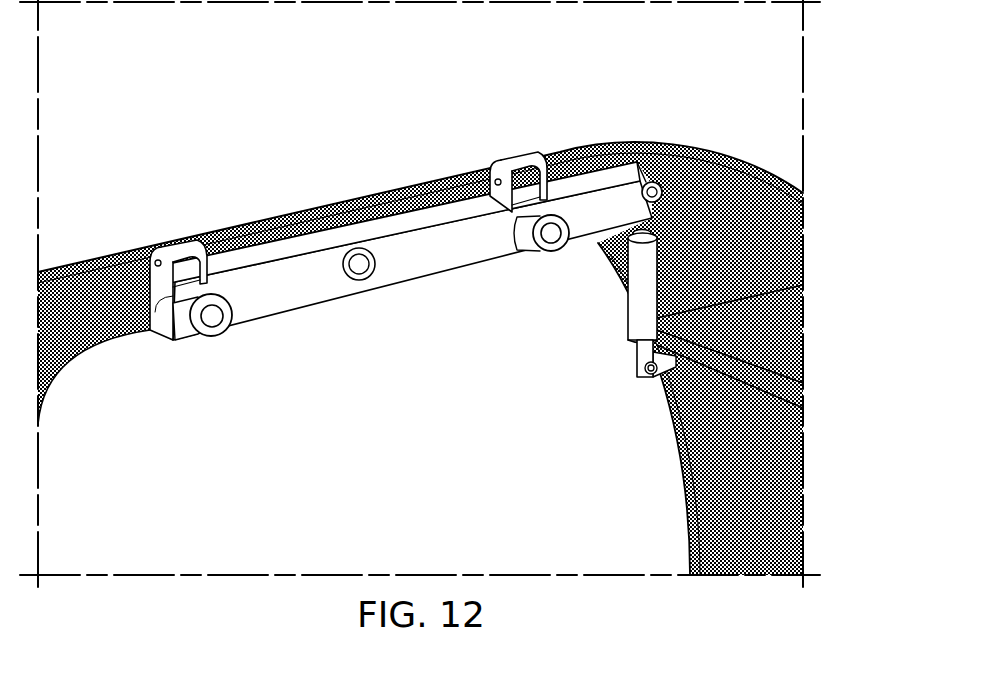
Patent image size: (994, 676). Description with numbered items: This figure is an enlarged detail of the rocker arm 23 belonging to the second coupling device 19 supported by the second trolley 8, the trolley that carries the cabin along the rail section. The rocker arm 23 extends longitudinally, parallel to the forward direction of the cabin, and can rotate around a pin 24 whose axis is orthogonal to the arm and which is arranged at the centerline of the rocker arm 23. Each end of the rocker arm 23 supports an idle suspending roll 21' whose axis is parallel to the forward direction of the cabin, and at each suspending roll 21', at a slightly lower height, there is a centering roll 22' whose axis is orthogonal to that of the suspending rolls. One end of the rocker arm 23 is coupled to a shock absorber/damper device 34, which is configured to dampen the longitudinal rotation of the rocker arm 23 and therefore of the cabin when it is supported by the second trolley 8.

The second trolley 8 is at (764, 162).
The second coupling device 19 is at (395, 221).
The suspending roll 21' is at (365, 199).
The centering roll 22' is at (371, 313).
The rocker arm 23 is at (422, 264).
The pin 24 is at (360, 281).
The shock absorber/damper device 34 is at (635, 312).